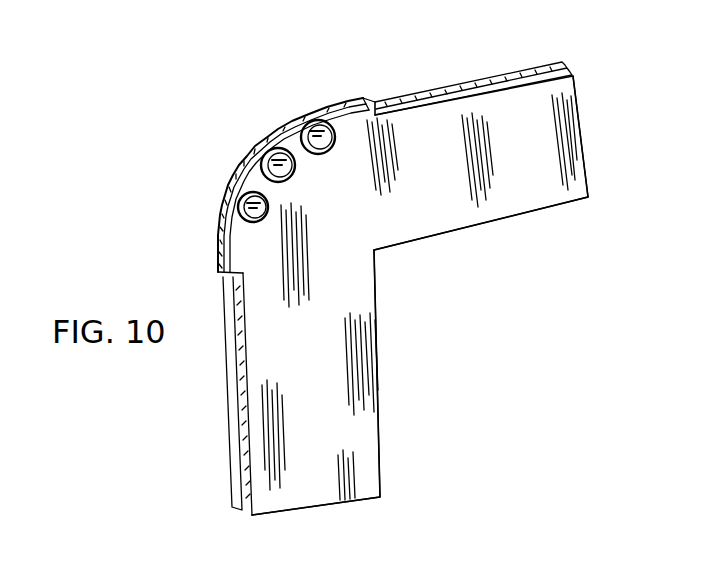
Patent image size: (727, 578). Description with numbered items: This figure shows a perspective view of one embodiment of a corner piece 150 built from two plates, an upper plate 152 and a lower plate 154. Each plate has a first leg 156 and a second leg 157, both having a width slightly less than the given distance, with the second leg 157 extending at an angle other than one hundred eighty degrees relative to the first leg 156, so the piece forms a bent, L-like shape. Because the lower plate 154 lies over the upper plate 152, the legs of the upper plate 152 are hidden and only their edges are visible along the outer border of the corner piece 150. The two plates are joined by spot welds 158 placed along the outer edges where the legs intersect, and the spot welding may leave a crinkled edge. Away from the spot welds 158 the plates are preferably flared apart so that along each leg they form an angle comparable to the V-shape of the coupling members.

The corner piece 150 is at (306, 80).
The upper plate 152 is at (477, 83).
The lower plate 154 is at (570, 190).
The first leg 156 is at (423, 220).
The second leg 157 is at (370, 385).
The spot welds 158 is at (301, 122).